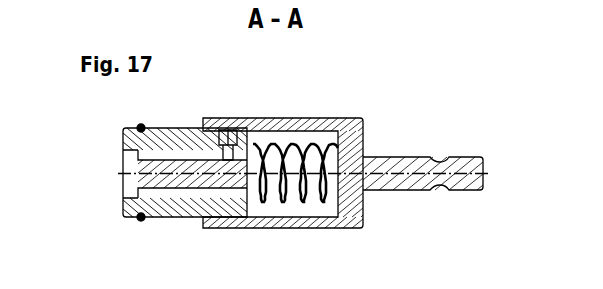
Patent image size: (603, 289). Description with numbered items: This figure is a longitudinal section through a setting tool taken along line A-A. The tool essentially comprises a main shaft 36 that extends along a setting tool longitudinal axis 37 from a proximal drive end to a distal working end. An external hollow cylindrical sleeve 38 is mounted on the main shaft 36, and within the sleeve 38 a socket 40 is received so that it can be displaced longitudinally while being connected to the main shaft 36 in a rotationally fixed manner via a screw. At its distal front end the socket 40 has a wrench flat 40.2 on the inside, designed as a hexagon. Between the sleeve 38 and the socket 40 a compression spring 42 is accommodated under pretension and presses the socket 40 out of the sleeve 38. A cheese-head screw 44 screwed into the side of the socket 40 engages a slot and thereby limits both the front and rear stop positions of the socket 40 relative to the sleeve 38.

The main shaft 36 is at (422, 157).
The setting tool longitudinal axis 37 is at (487, 173).
The sleeve 38 is at (301, 118).
The socket 40 is at (176, 216).
The wrench flat 40.2 is at (122, 170).
The compression spring 42 is at (313, 197).
The cheese-head screw 44 is at (235, 127).